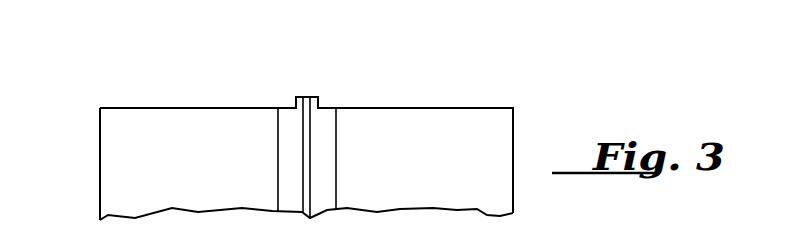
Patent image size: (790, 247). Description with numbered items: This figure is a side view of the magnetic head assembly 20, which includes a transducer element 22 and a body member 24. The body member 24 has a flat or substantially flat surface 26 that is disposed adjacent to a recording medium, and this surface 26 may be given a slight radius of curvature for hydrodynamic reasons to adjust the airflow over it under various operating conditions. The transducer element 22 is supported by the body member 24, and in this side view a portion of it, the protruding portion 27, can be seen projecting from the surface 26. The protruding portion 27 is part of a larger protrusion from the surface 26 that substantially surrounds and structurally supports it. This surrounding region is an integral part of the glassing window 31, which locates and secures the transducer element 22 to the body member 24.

The magnetic head assembly 20 is at (465, 88).
The transducer element 22 is at (307, 148).
The body member 24 is at (100, 162).
The flat surface 26 is at (209, 108).
The protruding portion 27 is at (325, 100).
The glassing window 31 is at (323, 180).